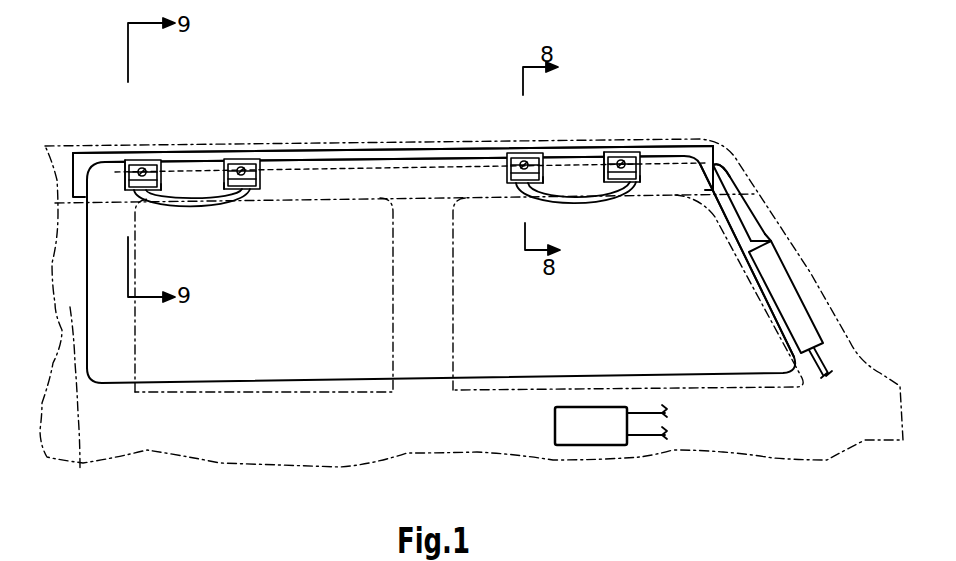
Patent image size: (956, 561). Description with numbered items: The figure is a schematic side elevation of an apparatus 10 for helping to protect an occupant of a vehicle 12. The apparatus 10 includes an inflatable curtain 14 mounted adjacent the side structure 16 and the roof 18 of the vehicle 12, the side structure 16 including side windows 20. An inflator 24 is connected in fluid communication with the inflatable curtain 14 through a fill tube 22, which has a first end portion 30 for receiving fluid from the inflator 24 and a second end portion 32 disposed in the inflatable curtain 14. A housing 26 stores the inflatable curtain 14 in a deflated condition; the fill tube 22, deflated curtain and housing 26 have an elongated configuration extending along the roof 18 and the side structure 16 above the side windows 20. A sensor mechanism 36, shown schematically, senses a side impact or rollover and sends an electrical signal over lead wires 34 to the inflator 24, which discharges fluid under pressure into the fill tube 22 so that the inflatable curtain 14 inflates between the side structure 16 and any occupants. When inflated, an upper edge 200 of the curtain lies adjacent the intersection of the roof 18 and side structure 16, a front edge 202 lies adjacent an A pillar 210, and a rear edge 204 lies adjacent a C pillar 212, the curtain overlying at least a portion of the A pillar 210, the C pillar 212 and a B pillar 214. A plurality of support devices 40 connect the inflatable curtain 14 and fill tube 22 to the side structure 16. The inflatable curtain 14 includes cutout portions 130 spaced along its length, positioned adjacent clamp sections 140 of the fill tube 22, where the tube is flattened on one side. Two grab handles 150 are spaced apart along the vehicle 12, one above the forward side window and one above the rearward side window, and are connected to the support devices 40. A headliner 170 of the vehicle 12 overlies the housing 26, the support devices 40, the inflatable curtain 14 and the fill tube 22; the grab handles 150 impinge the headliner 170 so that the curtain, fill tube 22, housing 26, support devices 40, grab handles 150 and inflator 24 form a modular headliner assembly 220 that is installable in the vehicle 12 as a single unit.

The apparatus 10 is at (294, 130).
The vehicle 12 is at (350, 90).
The inflatable curtain 14 is at (252, 362).
The side structure 16 is at (343, 413).
The roof 18 is at (432, 130).
The side windows 20 is at (318, 388).
The fill tube 22 is at (731, 177).
The inflator 24 is at (780, 273).
The housing 26 is at (407, 147).
The first end portion 30 is at (747, 213).
The second end portion 32 is at (217, 167).
The lead wires 34 is at (830, 350).
The sensor mechanism 36 is at (605, 447).
The support devices 40 is at (140, 172).
The cutout portions 130 is at (166, 190).
The clamp sections 140 is at (132, 165).
The grab handles 150 is at (217, 199).
The headliner 170 is at (423, 200).
The upper edge 200 is at (475, 160).
The front edge 202 is at (747, 262).
The rear edge 204 is at (87, 323).
The A pillar 210 is at (807, 277).
The C pillar 212 is at (79, 407).
The B pillar 214 is at (433, 323).
The modular headliner assembly 220 is at (686, 115).